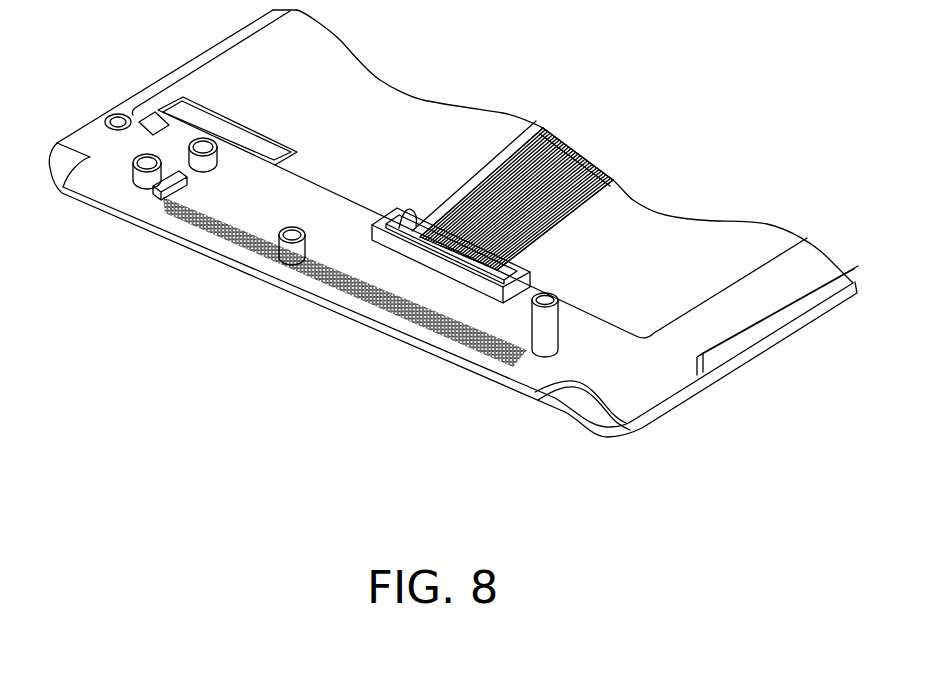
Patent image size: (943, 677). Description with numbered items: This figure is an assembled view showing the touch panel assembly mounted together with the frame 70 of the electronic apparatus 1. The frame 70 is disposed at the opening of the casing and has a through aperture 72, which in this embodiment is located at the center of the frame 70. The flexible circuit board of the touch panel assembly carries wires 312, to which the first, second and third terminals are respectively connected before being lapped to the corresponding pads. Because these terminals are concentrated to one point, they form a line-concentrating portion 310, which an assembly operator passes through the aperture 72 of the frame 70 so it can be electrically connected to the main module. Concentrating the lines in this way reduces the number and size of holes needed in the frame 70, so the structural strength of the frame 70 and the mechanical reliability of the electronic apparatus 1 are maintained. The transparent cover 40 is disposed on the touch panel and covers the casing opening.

The electronic apparatus 1 is at (453, 284).
The transparent cover 40 is at (223, 268).
The frame 70 is at (350, 215).
The aperture 72 is at (387, 223).
The line-concentrating portion 310 is at (607, 188).
The wires 312 is at (535, 217).